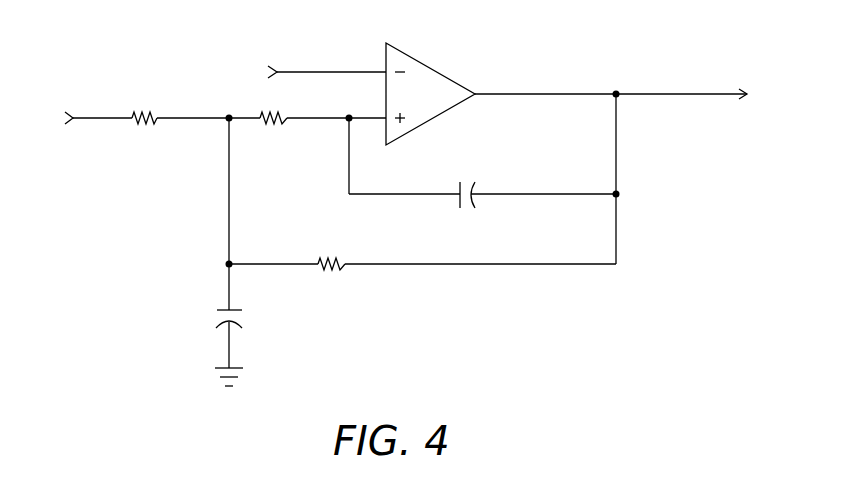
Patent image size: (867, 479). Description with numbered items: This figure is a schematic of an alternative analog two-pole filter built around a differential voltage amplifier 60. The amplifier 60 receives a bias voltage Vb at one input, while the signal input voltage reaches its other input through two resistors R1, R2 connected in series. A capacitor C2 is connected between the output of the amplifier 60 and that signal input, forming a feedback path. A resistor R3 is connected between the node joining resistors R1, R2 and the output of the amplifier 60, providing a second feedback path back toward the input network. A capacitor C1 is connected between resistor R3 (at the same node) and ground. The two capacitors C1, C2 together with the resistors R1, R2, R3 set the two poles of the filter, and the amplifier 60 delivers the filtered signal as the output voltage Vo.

The resistor R1 is at (144, 106).
The resistor R2 is at (273, 106).
The resistor R3 is at (422, 253).
The capacitor C1 is at (242, 339).
The capacitor C2 is at (482, 184).
The differential voltage amplifier 60 is at (453, 81).
The bias voltage Vb is at (313, 66).
The output voltage Vo is at (623, 96).